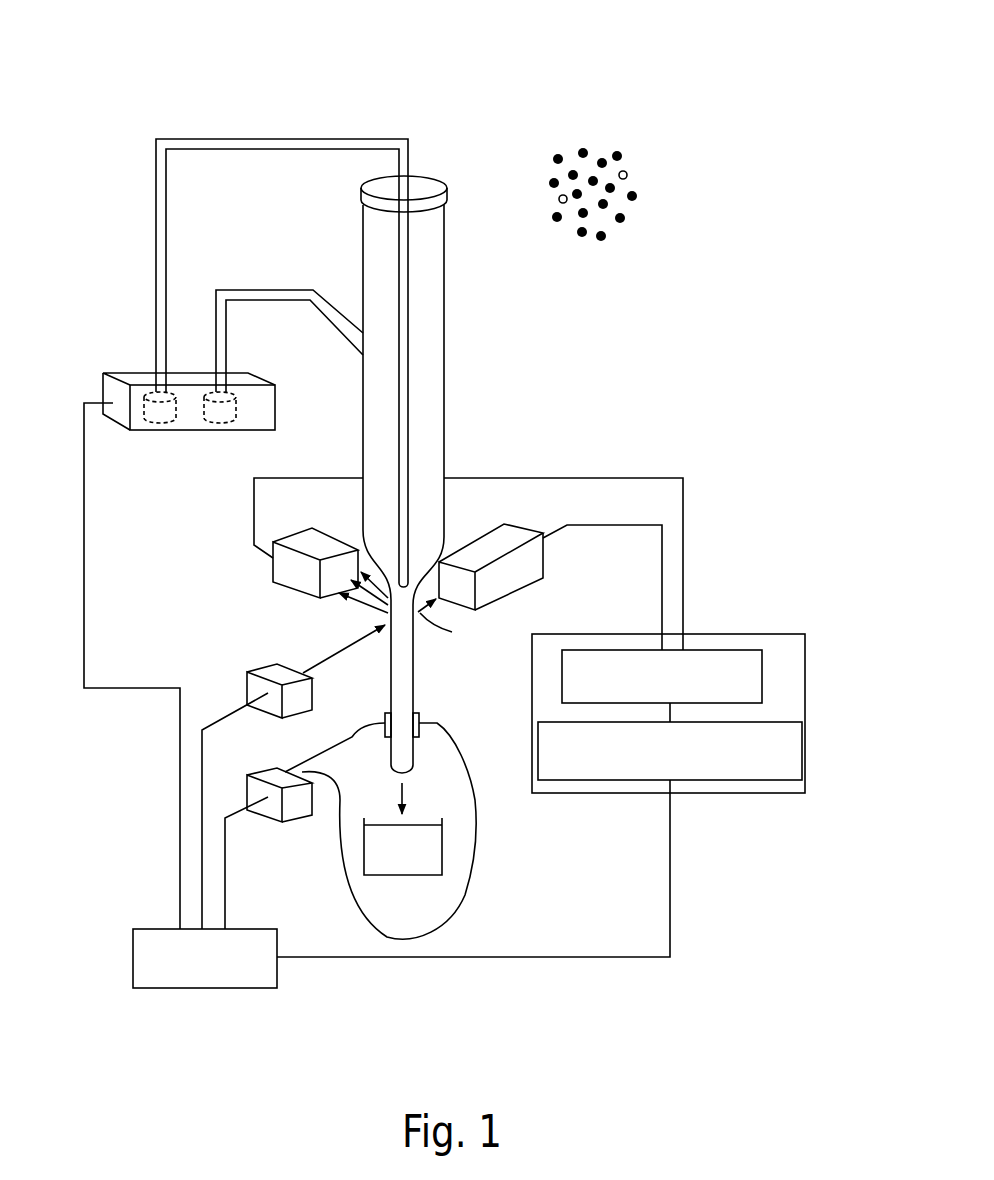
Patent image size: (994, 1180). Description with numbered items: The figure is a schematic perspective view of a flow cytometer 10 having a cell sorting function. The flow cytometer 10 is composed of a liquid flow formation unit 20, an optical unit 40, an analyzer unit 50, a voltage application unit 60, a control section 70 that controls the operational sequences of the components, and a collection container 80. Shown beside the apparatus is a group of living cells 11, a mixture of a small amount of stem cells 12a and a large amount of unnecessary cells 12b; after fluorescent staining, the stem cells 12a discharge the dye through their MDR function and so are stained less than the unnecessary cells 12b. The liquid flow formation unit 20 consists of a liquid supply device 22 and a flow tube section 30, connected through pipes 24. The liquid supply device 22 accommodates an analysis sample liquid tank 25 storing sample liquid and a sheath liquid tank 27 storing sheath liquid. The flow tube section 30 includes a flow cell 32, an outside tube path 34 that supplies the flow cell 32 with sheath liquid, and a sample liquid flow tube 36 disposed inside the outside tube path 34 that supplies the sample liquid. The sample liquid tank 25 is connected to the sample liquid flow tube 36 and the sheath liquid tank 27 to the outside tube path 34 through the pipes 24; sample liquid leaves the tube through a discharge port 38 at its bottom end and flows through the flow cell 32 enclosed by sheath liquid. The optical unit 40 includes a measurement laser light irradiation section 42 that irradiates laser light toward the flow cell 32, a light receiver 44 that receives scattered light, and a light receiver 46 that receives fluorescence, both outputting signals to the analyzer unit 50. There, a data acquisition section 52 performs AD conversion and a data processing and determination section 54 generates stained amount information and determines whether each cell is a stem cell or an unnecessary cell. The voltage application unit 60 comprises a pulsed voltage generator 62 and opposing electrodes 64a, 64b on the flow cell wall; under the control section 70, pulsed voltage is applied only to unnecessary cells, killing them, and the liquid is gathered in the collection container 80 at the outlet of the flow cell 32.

The flow cytometer 10 is at (564, 76).
The group of living cells 11 is at (712, 187).
The stem cells 12a is at (628, 173).
The unnecessary cells 12b is at (625, 221).
The liquid flow formation unit 20 is at (361, 124).
The liquid supply device 22 is at (163, 636).
The pipes 24 is at (244, 150).
The analysis sample liquid tank 25 is at (160, 430).
The sheath liquid tank 27 is at (220, 430).
The flow tube section 30 is at (468, 474).
The flow cell 32 is at (397, 661).
The outside tube path 34 is at (413, 480).
The sample liquid flow tube 36 is at (408, 443).
The discharge port 38 is at (402, 561).
The optical unit 40 is at (434, 763).
The measurement laser light irradiation section 42 is at (280, 706).
The light receiver 44 is at (513, 595).
The light receiver 46 is at (278, 587).
The analyzer unit 50 is at (689, 682).
The data acquisition section 52 is at (762, 677).
The data processing and determination section 54 is at (802, 742).
The voltage application unit 60 is at (319, 887).
The pulsed voltage generator 62 is at (272, 804).
The electrode 64a is at (387, 738).
The electrode 64b is at (419, 738).
The control section 70 is at (203, 988).
The collection container 80 is at (405, 876).